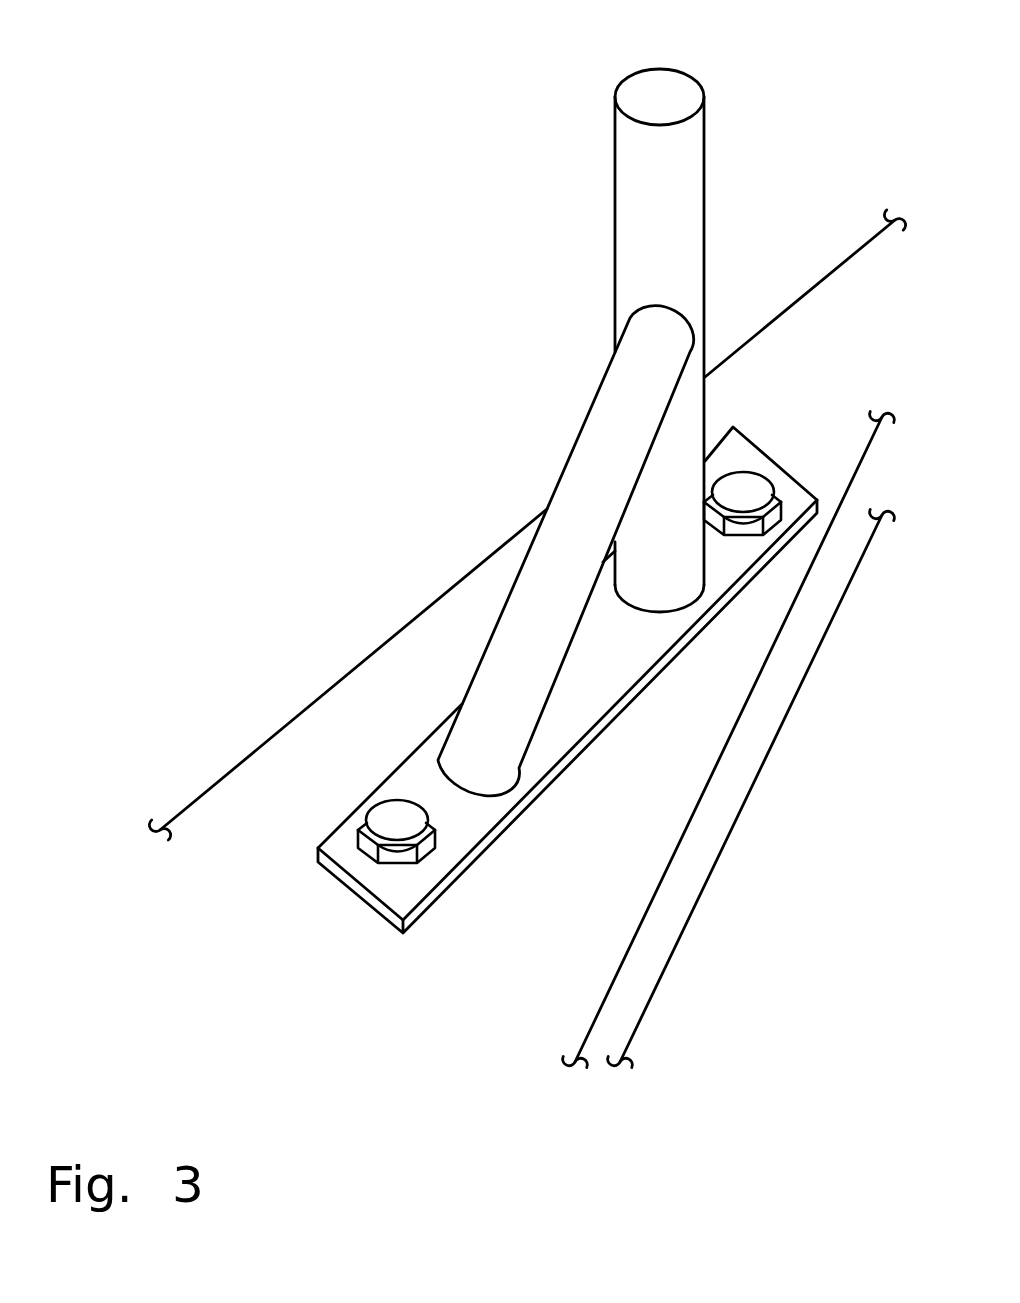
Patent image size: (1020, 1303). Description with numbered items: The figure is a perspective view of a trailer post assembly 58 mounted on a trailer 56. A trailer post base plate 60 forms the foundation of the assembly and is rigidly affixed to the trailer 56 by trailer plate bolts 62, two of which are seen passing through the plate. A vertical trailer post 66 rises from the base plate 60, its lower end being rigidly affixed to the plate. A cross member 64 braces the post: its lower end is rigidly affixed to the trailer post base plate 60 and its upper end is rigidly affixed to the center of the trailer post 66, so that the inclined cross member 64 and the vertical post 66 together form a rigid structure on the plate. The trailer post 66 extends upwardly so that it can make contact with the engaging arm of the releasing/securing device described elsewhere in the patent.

The trailer 56 is at (688, 875).
The trailer post assembly 58 is at (523, 380).
The trailer post base plate 60 is at (550, 730).
The trailer plate bolts 62 is at (747, 492).
The cross member 64 is at (517, 625).
The trailer post 66 is at (665, 253).